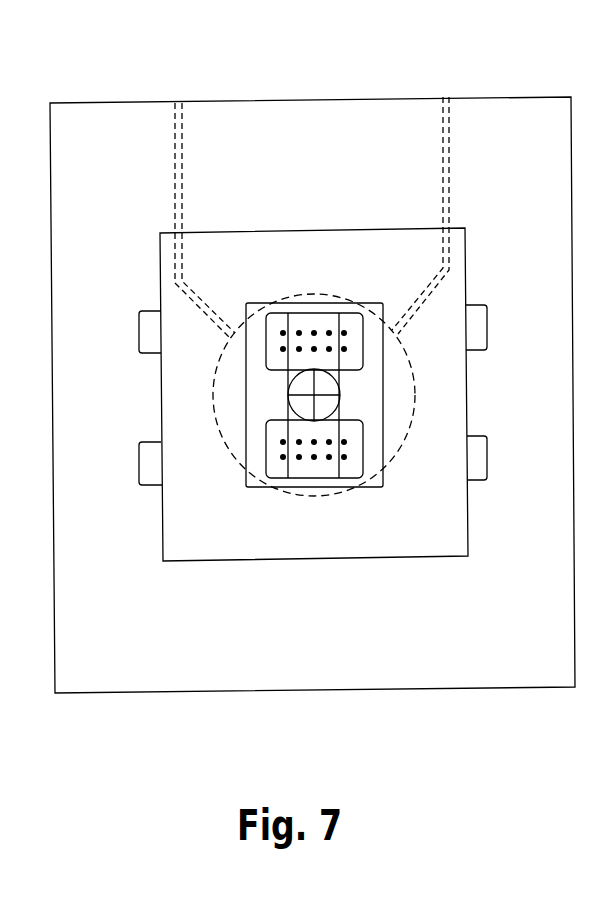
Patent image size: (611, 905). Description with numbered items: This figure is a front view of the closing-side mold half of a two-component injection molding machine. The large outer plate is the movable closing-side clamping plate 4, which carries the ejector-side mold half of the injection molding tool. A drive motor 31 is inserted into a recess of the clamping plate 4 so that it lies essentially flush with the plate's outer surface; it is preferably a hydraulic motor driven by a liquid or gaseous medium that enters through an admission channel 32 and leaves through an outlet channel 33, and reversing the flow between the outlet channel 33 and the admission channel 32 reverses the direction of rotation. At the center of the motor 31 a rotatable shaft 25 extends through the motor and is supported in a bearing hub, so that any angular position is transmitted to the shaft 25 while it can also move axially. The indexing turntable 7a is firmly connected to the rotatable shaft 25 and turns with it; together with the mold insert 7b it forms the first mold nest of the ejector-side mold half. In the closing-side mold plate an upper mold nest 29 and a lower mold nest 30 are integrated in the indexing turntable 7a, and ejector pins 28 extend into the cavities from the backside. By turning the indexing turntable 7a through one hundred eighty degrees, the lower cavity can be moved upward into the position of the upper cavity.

The closing-side clamping plate 4 is at (465, 663).
The outlet channel 33 is at (177, 101).
The admission channel 32 is at (447, 97).
The drive motor 31 is at (398, 415).
The mold insert 7b is at (373, 396).
The indexing turntable 7a is at (325, 318).
The upper mold nest 29 is at (357, 318).
The lower mold nest 30 is at (313, 472).
The ejector pins 28 is at (329, 458).
The rotatable shaft 25 is at (298, 407).